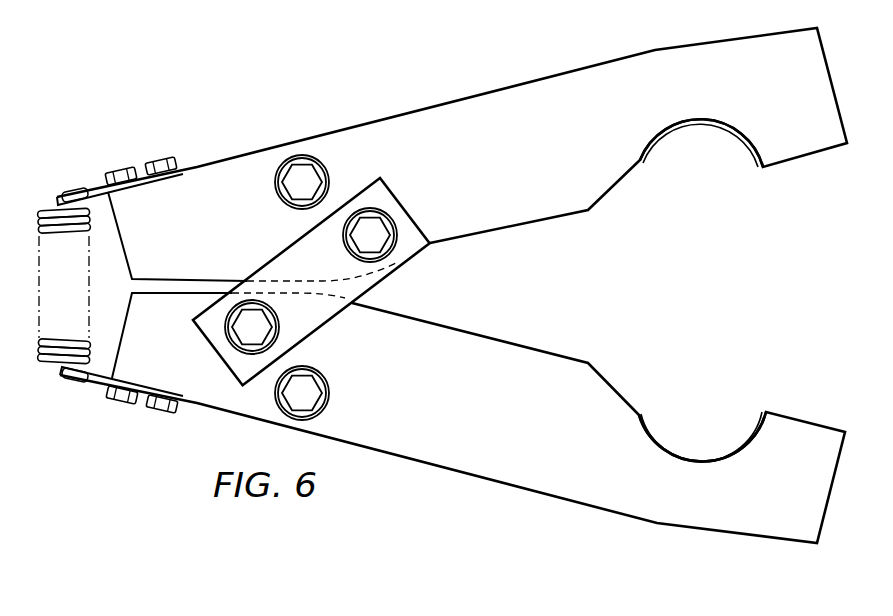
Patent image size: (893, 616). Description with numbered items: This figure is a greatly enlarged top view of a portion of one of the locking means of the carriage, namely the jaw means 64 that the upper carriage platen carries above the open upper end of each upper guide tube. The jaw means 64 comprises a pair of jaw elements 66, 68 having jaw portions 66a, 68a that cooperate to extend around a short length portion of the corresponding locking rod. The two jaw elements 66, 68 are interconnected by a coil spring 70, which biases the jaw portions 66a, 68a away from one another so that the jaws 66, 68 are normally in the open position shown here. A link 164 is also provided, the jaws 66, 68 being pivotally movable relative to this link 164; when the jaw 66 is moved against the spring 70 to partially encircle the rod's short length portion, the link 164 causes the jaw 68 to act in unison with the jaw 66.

The jaw means 64 is at (432, 280).
The jaw element 66 is at (458, 100).
The jaw portion 66a is at (733, 140).
The jaw element 68 is at (477, 465).
The jaw portion 68a is at (688, 448).
The coil spring 70 is at (38, 214).
The link 164 is at (376, 289).